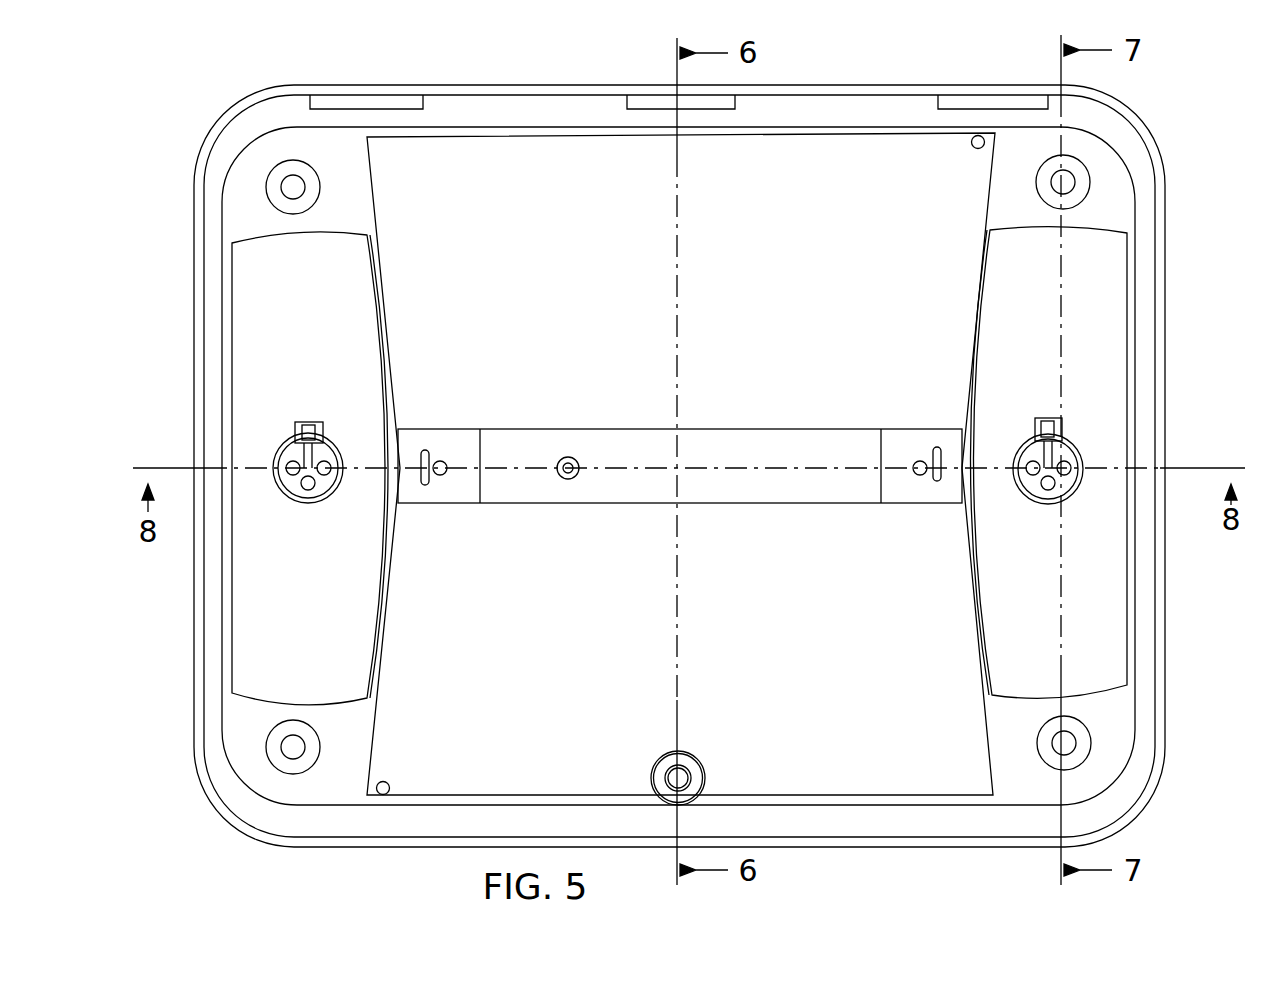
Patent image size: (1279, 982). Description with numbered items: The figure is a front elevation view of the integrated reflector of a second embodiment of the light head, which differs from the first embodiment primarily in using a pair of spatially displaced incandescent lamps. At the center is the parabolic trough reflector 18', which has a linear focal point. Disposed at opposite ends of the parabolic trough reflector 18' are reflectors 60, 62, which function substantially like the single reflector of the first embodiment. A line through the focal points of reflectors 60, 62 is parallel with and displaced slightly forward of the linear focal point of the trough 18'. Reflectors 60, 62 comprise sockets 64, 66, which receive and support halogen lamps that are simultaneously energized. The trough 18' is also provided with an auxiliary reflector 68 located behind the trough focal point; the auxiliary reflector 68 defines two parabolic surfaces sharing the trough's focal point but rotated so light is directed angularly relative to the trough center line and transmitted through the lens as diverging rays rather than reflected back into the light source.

The parabolic trough reflector 18' is at (681, 469).
The reflector 60 is at (289, 637).
The reflector 62 is at (1008, 620).
The socket 64 is at (333, 447).
The socket 66 is at (1079, 443).
The auxiliary reflector 68 is at (750, 445).